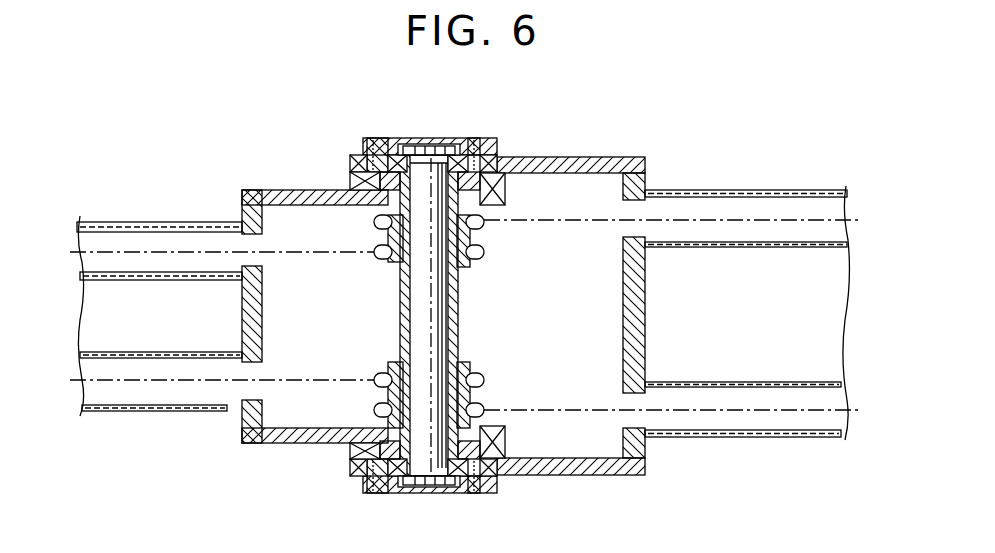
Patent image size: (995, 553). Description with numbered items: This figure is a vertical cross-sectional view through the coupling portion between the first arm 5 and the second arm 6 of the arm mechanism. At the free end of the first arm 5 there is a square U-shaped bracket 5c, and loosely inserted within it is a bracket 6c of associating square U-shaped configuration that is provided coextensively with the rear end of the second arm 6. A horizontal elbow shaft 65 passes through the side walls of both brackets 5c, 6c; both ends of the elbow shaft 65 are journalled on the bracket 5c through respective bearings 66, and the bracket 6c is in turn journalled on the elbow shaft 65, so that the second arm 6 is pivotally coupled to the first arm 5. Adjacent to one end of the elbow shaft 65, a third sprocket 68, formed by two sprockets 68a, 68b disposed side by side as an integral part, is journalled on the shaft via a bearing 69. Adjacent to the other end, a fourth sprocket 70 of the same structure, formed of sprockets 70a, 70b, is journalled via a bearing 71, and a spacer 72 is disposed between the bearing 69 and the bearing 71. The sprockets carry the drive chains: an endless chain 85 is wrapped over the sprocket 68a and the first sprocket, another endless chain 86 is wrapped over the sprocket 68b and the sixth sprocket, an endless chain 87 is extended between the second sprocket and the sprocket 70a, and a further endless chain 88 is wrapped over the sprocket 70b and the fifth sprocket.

The first arm 5 is at (718, 437).
The square U-shaped bracket 5c is at (602, 158).
The second arm 6 is at (135, 406).
The bracket 6c is at (312, 192).
The elbow shaft 65 is at (422, 463).
The bearings 66 is at (385, 160).
The third sprocket 68 is at (502, 255).
The sprocket 68a is at (484, 226).
The sprocket 68b is at (484, 256).
The bearing 69 is at (400, 260).
The fourth sprocket 70 is at (497, 384).
The sprocket 70a is at (484, 410).
The sprocket 70b is at (484, 380).
The bearing 71 is at (396, 364).
The spacer 72 is at (402, 322).
The endless chain 85 is at (735, 221).
The endless chain 86 is at (165, 252).
The endless chain 87 is at (800, 411).
The endless chain 88 is at (165, 382).